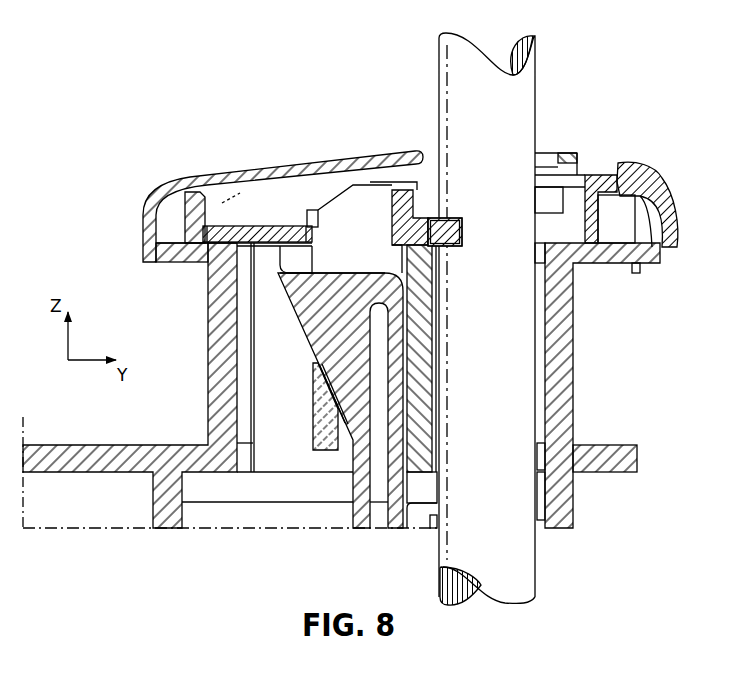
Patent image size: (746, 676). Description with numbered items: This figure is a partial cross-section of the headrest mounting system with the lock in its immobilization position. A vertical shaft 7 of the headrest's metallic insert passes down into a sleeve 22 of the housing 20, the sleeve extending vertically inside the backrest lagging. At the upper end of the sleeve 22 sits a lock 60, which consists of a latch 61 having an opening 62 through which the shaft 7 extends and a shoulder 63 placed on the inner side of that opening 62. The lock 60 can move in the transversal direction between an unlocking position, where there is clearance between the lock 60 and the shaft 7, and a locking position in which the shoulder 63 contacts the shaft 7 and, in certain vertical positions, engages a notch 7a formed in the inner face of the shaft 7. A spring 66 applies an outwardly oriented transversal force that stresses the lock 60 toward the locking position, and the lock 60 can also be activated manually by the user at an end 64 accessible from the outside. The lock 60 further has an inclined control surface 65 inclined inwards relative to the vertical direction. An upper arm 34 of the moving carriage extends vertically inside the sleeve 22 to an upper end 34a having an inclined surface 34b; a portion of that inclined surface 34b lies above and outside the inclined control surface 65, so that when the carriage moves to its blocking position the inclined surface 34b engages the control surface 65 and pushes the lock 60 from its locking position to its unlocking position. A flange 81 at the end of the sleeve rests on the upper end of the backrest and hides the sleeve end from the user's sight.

The shaft 7 is at (460, 77).
The notch 7a is at (465, 221).
The housing 20 is at (608, 455).
The sleeve 22 is at (577, 318).
The upper arm 34 is at (360, 523).
The upper end 34a is at (338, 268).
The inclined surface 34b is at (354, 429).
The lock 60 is at (253, 143).
The latch 61 is at (370, 213).
The opening 62 is at (566, 232).
The shoulder 63 is at (413, 208).
The end 64 is at (650, 170).
The inclined control surface 65 is at (328, 404).
The spring 66 is at (222, 236).
The flange 81 is at (162, 192).